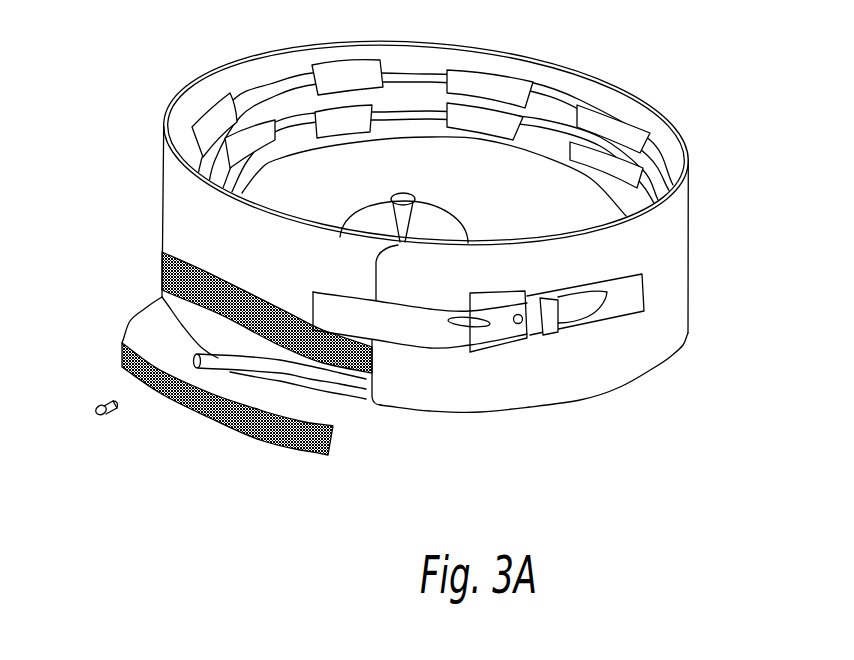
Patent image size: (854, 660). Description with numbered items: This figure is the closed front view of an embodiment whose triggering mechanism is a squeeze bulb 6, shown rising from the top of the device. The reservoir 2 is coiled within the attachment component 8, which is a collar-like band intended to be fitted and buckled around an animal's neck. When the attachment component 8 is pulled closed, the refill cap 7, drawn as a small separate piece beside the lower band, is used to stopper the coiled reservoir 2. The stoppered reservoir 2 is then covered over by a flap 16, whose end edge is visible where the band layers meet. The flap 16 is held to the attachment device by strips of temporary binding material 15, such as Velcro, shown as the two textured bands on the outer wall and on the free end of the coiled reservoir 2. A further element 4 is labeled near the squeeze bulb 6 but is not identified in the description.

The reservoir 2 is at (284, 364).
The peg 4 is at (395, 212).
The squeeze bulb 6 is at (442, 220).
The refill cap 7 is at (112, 413).
The attachment component 8 is at (375, 290).
The temporary binding material 15 is at (163, 259).
The flap 16 is at (335, 420).